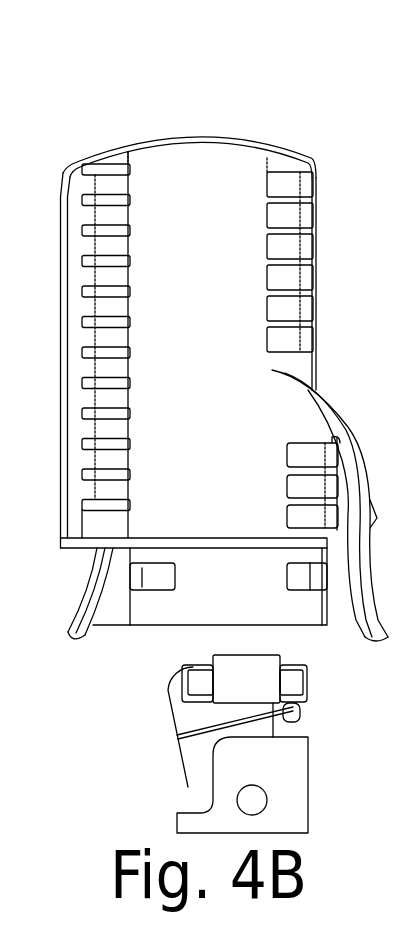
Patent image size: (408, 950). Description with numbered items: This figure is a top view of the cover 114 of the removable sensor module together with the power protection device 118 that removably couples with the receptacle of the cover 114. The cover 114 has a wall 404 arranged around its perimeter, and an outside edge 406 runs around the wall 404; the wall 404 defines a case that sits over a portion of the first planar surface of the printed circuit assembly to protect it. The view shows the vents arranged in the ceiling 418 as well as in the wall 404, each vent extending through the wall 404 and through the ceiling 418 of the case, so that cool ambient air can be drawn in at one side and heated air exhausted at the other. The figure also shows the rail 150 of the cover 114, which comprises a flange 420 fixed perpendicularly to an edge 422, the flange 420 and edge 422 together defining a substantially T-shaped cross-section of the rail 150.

The cover 114 is at (74, 124).
The rail 150 is at (70, 172).
The edge 422 is at (63, 197).
The flange 420 is at (62, 198).
The wall 404 is at (301, 247).
The outside edge 406 is at (311, 360).
The ceiling 418 is at (202, 328).
The power protection device 118 is at (158, 786).